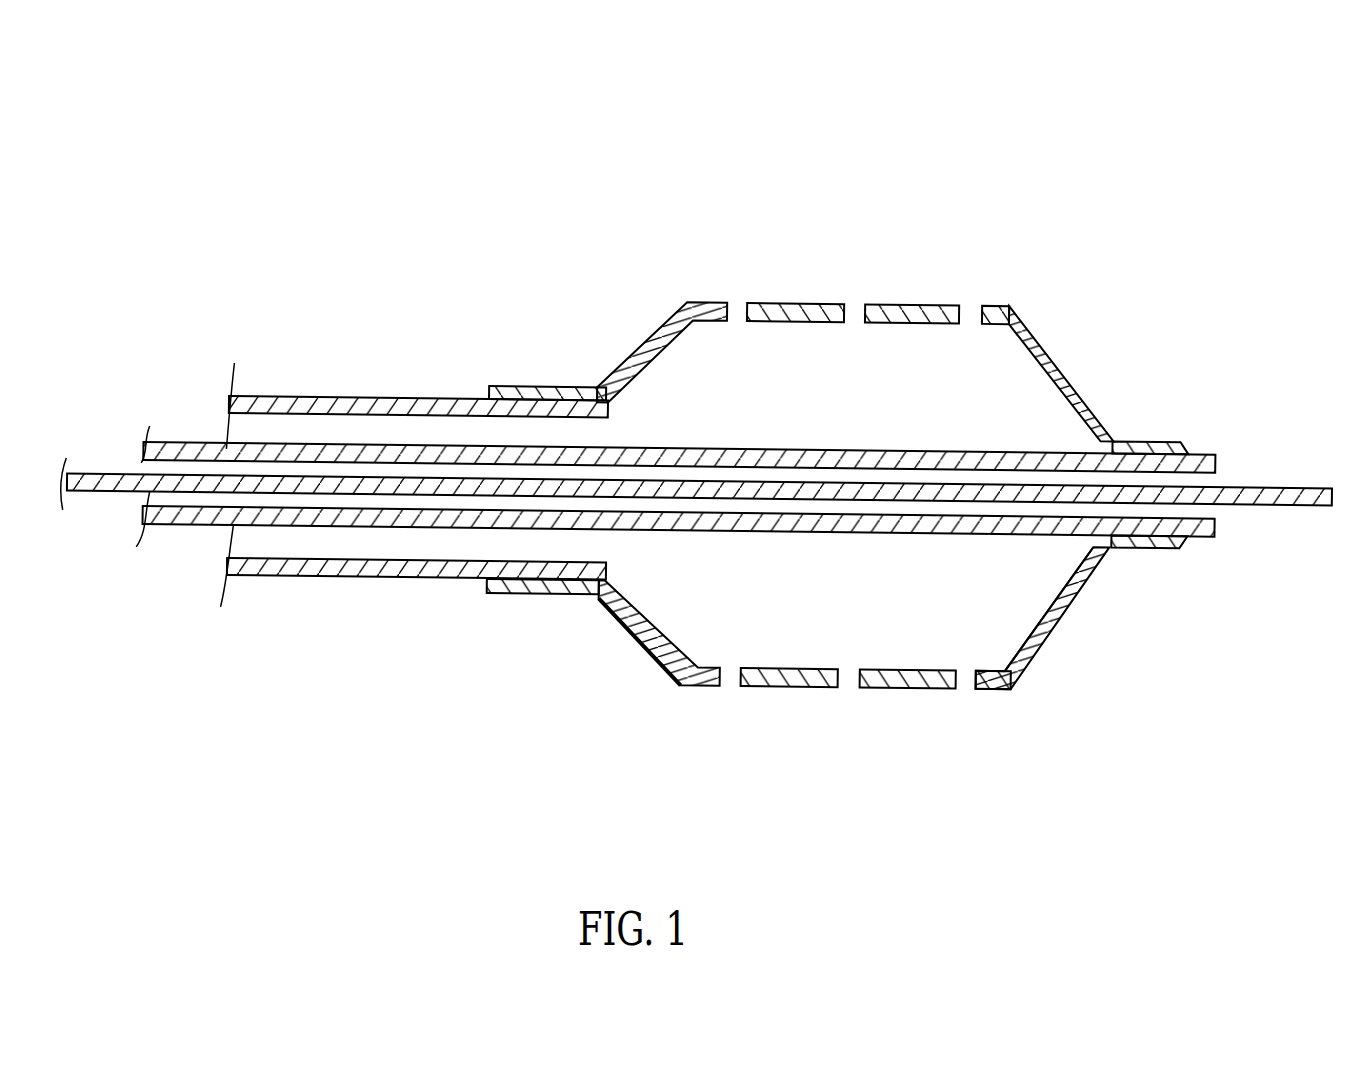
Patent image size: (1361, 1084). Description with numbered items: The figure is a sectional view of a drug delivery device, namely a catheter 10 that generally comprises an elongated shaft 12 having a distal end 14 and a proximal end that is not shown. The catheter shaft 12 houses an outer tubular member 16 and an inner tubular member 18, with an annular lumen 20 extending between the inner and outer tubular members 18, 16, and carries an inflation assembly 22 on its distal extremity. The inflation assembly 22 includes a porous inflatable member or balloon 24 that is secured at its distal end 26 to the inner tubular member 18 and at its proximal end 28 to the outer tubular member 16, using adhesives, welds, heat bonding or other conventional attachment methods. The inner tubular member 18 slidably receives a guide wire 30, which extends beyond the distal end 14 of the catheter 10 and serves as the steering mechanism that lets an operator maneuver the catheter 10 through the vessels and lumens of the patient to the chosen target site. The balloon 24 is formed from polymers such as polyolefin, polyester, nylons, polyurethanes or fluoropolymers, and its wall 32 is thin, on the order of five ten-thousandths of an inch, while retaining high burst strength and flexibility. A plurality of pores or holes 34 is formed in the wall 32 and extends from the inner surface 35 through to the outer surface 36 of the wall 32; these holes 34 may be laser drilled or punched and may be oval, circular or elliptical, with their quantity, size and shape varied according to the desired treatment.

The catheter 10 is at (693, 408).
The elongated shaft 12 is at (477, 630).
The distal end 14 is at (1290, 350).
The outer tubular member 16 is at (418, 400).
The inner tubular member 18 is at (178, 442).
The annular lumen 20 is at (297, 420).
The inflation assembly 22 is at (915, 266).
The inflatable balloon 24 is at (1024, 330).
The distal end of balloon 26 is at (1140, 425).
The proximal end of balloon 28 is at (548, 377).
The guide wire 30 is at (1304, 487).
The wall of balloon 32 is at (656, 646).
The pores or holes 34 is at (733, 305).
The inner surface 35 is at (1056, 580).
The outer surface 36 is at (1058, 638).